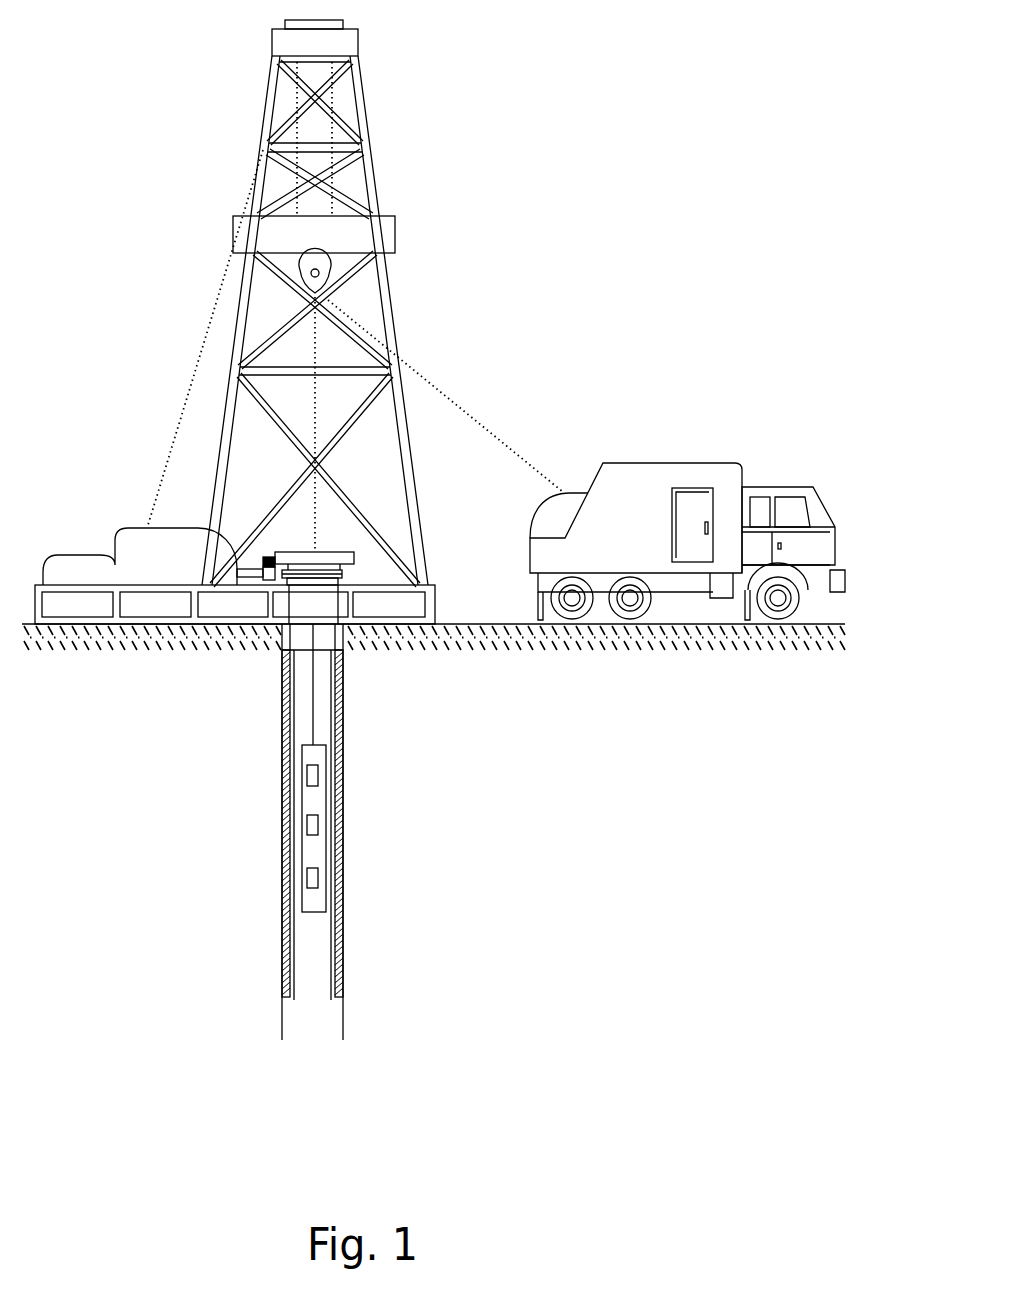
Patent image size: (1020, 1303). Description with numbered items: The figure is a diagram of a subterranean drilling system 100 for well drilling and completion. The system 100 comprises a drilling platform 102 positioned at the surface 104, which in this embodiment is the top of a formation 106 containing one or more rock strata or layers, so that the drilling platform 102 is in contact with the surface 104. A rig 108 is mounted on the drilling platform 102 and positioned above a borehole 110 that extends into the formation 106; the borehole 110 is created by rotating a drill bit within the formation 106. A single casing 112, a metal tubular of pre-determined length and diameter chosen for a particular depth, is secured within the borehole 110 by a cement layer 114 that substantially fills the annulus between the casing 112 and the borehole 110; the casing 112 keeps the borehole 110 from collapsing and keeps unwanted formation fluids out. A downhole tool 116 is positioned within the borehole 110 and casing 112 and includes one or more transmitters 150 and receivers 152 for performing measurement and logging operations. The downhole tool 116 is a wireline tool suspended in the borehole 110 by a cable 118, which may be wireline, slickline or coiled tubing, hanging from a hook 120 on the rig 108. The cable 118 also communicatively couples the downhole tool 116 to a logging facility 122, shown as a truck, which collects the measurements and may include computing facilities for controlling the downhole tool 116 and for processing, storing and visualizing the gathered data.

The subterranean drilling system 100 is at (615, 65).
The drilling platform 102 is at (437, 592).
The surface 104 is at (517, 625).
The formation 106 is at (618, 758).
The rig 108 is at (365, 108).
The borehole 110 is at (310, 832).
The casing 112 is at (288, 917).
The cement layer 114 is at (282, 965).
The downhole tool 116 is at (316, 861).
The cable 118 is at (312, 711).
The hook 120 is at (325, 268).
The logging facility 122 is at (663, 463).
The transmitters 150 is at (269, 808).
The receivers 152 is at (306, 824).